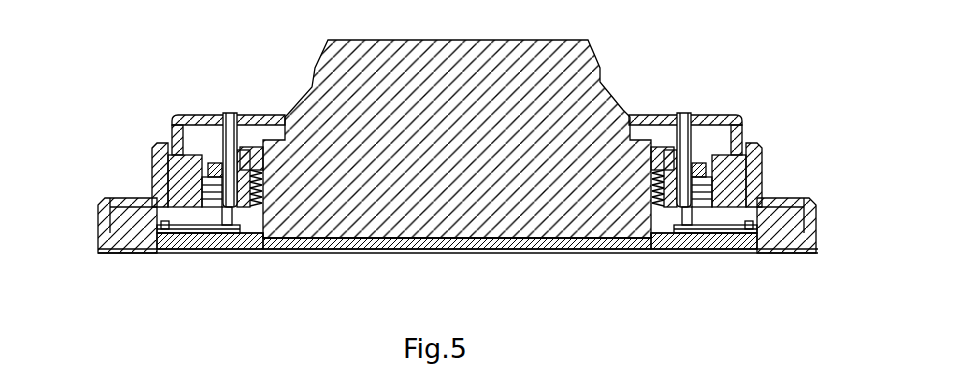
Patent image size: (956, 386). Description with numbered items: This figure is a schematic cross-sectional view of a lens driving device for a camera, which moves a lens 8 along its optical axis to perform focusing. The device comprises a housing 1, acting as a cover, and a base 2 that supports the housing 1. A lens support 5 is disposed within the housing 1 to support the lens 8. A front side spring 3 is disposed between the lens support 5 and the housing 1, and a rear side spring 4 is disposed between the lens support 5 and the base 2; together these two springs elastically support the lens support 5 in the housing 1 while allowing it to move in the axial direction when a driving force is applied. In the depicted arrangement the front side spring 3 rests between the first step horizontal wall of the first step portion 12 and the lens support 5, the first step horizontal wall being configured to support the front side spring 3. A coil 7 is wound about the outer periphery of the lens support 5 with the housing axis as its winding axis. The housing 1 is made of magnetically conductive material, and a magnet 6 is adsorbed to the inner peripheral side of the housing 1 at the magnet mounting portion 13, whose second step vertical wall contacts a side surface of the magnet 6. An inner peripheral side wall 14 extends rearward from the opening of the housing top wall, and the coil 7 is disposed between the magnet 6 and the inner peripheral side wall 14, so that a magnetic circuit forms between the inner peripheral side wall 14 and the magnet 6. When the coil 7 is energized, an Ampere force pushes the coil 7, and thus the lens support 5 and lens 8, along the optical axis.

The housing 1 is at (105, 199).
The base 2 is at (118, 252).
The front side spring 3 is at (207, 158).
The rear side spring 4 is at (182, 234).
The lens support 5 is at (243, 114).
The magnet 6 is at (155, 175).
The coil 7 is at (222, 233).
The lens 8 is at (582, 72).
The first step portion 12 is at (173, 117).
The magnet mounting portion 13 is at (165, 146).
The inner peripheral side wall 14 is at (226, 117).